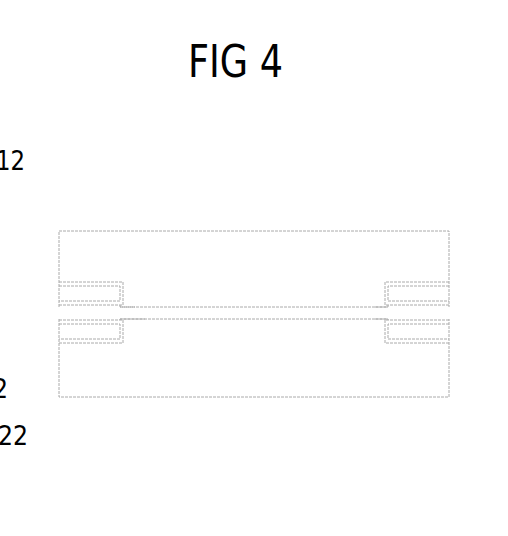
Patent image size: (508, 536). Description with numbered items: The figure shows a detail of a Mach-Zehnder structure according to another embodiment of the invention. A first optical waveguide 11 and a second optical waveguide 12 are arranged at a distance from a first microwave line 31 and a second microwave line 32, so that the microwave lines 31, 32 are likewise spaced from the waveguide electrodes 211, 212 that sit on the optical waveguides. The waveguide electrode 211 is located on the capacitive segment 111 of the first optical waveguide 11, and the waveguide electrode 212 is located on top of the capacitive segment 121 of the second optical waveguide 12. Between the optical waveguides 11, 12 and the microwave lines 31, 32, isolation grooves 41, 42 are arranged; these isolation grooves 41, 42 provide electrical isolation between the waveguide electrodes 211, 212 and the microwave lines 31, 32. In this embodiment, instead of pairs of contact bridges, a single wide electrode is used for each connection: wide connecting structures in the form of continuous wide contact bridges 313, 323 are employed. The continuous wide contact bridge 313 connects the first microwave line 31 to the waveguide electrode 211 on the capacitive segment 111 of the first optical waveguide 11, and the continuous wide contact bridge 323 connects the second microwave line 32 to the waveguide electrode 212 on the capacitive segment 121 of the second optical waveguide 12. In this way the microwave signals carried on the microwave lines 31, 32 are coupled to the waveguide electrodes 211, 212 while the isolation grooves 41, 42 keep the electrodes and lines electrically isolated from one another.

The first optical waveguide 11 is at (445, 305).
The capacitive segment of the first optical waveguide 111 is at (388, 305).
The second optical waveguide 12 is at (437, 323).
The capacitive segment of the second optical waveguide 121 is at (388, 322).
The first microwave line 31 is at (307, 248).
The continuous wide contact bridge 313 is at (183, 292).
The second microwave line 32 is at (272, 385).
The continuous wide contact bridge 323 is at (185, 333).
The isolation groove 41 is at (65, 298).
The isolation groove 42 is at (68, 332).
The waveguide electrode 211 is at (135, 305).
The waveguide electrode 212 is at (143, 321).